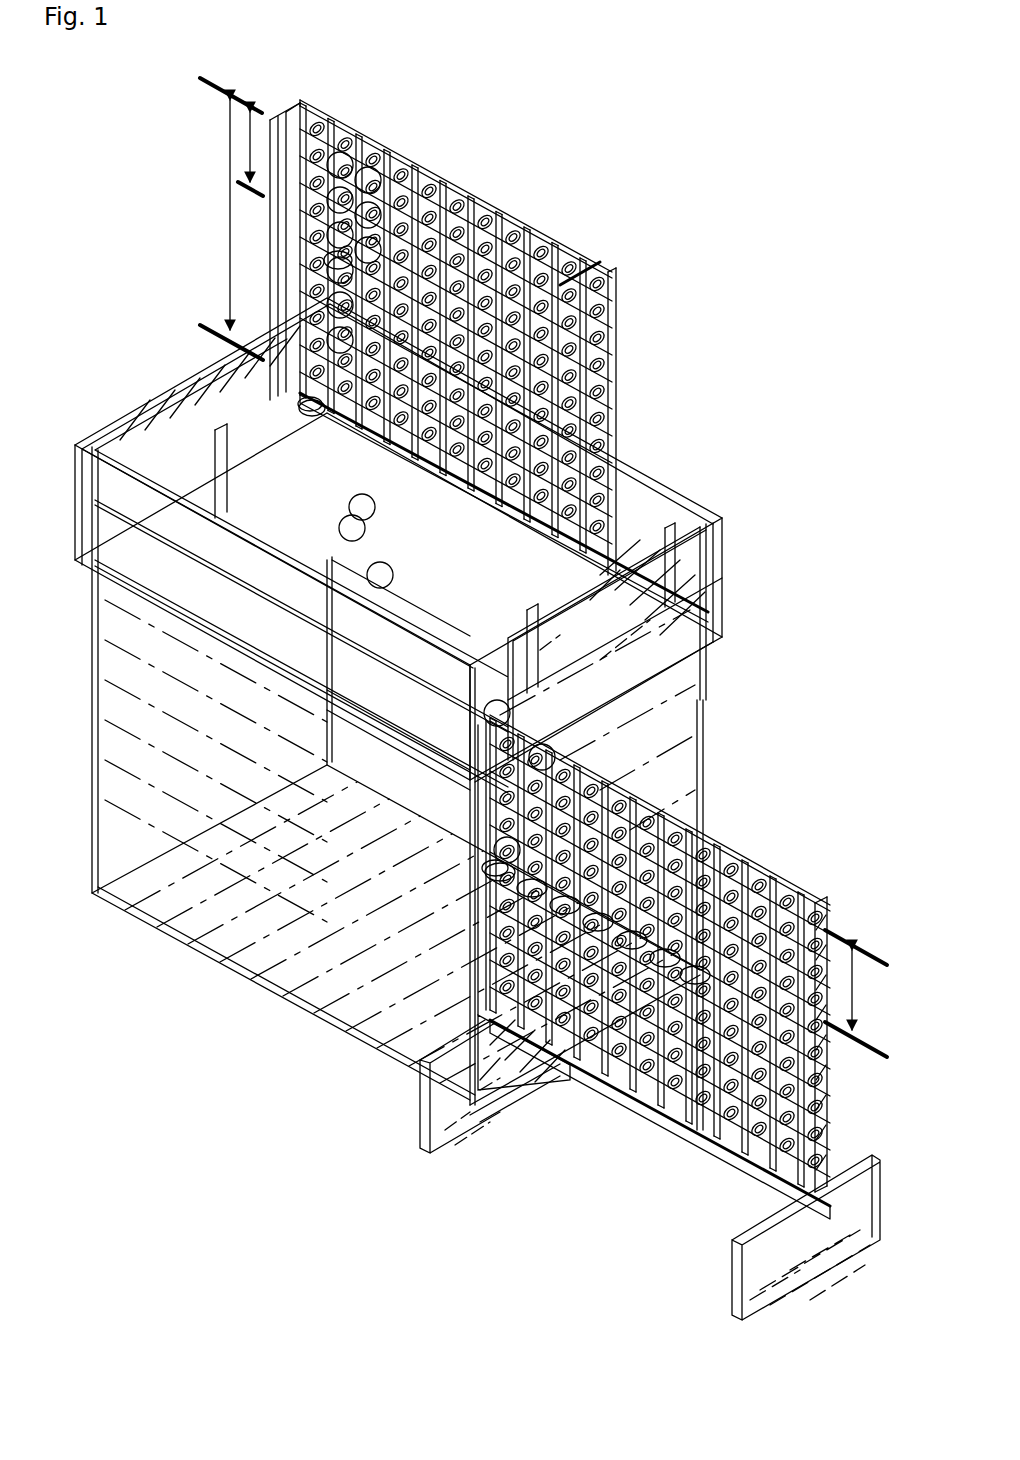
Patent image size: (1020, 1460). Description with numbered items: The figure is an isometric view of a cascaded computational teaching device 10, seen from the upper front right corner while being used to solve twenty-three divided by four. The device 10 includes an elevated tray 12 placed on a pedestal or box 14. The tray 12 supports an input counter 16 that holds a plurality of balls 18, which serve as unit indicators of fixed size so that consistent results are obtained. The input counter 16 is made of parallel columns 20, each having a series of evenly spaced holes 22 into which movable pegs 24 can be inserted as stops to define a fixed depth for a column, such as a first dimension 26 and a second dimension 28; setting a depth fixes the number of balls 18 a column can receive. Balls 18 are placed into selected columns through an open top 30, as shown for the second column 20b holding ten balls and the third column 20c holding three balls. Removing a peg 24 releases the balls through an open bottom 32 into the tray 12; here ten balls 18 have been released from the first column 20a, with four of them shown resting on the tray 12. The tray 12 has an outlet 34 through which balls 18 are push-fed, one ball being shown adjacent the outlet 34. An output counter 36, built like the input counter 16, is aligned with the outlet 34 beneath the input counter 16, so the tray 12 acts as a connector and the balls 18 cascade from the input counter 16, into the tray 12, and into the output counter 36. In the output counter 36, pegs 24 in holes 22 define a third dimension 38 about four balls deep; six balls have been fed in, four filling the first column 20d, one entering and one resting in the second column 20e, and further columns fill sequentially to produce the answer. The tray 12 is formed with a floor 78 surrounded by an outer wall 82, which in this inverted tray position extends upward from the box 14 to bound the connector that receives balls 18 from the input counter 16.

The teaching device 10 is at (120, 180).
The elevated tray 12 is at (746, 598).
The box 14 is at (80, 681).
The input counter 16 is at (491, 632).
The balls 18 is at (383, 168).
The columns 20 is at (505, 210).
The first column 20a is at (330, 110).
The second column 20b is at (365, 130).
The third column 20c is at (395, 160).
The first column 20d is at (525, 752).
The second column 20e is at (570, 777).
The holes 22 is at (600, 285).
The pegs 24 is at (298, 402).
The first dimension 26 is at (225, 272).
The second dimension 28 is at (238, 140).
The open top 30 is at (465, 200).
The open bottom 32 is at (480, 506).
The outlet 34 is at (488, 690).
The output counter 36 is at (664, 1017).
The third dimension 38 is at (860, 985).
The floor 78 is at (270, 520).
The outer wall 82 is at (460, 675).